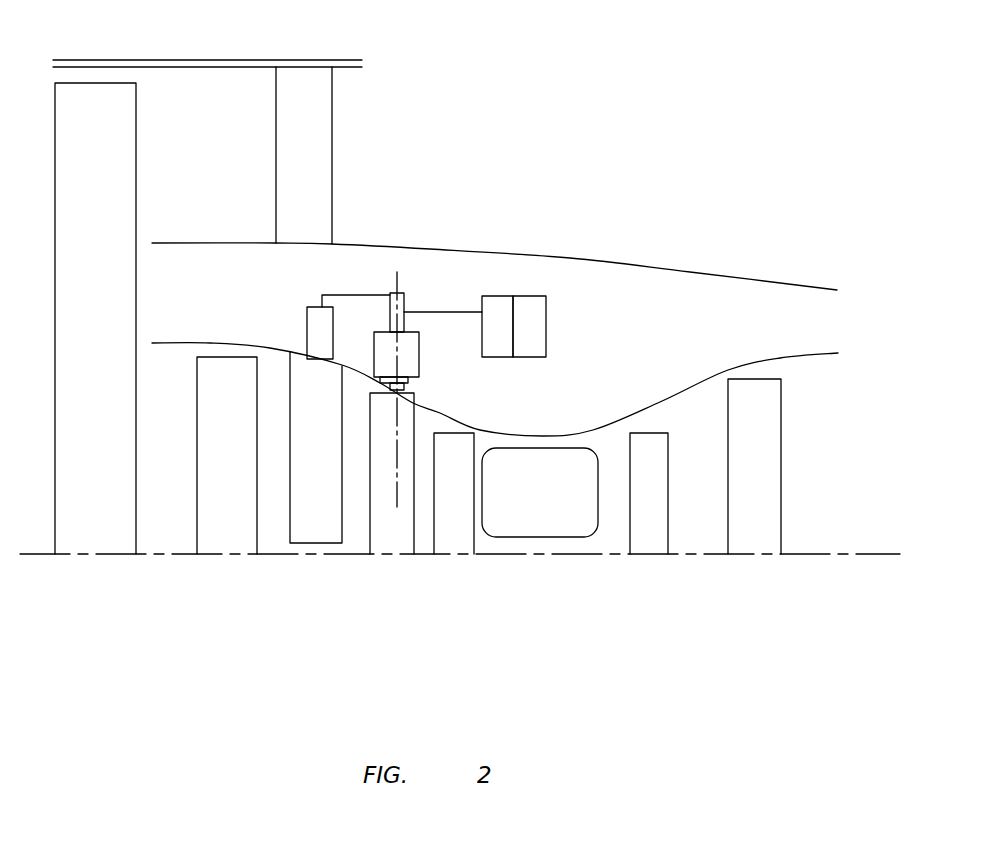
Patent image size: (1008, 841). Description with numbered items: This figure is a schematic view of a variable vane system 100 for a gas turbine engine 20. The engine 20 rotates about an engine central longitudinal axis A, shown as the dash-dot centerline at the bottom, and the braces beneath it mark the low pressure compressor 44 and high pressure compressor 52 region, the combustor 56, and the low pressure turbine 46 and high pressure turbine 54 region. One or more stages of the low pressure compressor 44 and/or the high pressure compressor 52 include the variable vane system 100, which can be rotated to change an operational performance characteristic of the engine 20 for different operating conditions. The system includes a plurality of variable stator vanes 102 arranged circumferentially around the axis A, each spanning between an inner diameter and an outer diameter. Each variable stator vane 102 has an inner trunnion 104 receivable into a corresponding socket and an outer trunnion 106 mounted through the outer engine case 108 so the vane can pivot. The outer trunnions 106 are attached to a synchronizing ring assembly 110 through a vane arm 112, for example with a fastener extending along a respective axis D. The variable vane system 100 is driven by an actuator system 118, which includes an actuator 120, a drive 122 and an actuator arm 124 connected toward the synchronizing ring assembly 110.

The gas turbine engine 20 is at (627, 90).
The low pressure compressor 44 is at (334, 676).
The high pressure compressor 52 is at (472, 645).
The low pressure turbine 46 is at (714, 509).
The high pressure turbine 54 is at (798, 578).
The combustor 56 is at (605, 578).
The variable vane system 100 is at (588, 272).
The variable stator vane 102 is at (307, 409).
The inner trunnion 104 is at (322, 560).
The outer trunnion 106 is at (314, 314).
The outer engine case 108 is at (613, 422).
The synchronizing ring assembly 110 is at (420, 358).
The vane arm 112 is at (357, 295).
The actuator system 118 is at (565, 333).
The actuator 120 is at (536, 307).
The drive 122 is at (500, 310).
The actuator arm 124 is at (447, 312).
The axis D is at (394, 495).
The engine central longitudinal axis A is at (883, 554).